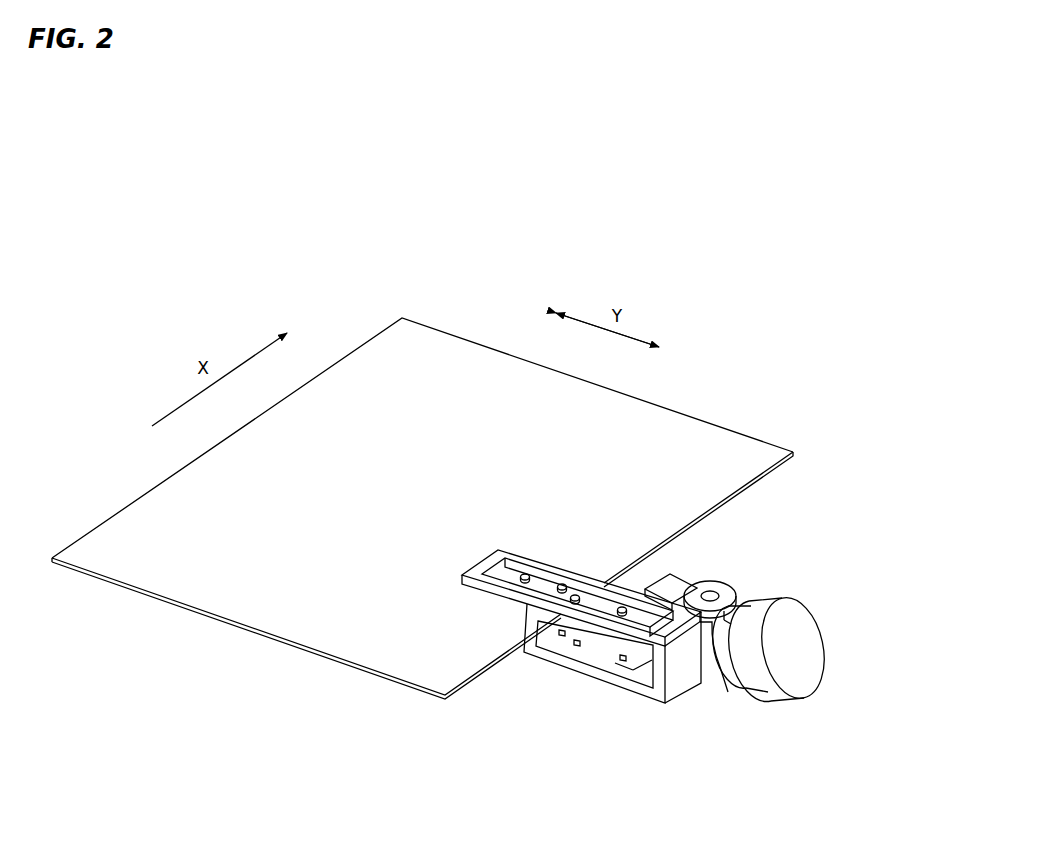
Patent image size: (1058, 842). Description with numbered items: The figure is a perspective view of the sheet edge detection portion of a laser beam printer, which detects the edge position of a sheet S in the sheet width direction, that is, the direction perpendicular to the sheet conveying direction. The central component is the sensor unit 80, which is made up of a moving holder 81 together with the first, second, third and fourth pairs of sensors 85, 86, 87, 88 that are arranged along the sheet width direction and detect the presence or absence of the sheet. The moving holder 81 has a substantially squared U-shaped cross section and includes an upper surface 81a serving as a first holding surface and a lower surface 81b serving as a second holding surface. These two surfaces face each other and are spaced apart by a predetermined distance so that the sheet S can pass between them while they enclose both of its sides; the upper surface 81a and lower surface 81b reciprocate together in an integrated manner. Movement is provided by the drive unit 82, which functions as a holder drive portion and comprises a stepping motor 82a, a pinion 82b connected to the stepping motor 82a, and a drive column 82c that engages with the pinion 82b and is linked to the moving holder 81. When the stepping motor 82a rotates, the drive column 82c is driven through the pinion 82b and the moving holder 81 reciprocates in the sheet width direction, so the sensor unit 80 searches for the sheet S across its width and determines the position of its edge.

The sheet S is at (242, 607).
The sensor unit 80 is at (585, 495).
The moving holder 81 is at (562, 653).
The upper surface 81a is at (477, 586).
The lower surface 81b is at (528, 653).
The first pair of sensors 85 is at (528, 568).
The second pair of sensors 86 is at (565, 580).
The third pair of sensors 87 is at (584, 592).
The fourth pair of sensors 88 is at (632, 592).
The drive unit 82 is at (805, 586).
The stepping motor 82a is at (806, 652).
The pinion 82b is at (722, 653).
The drive column 82c is at (738, 583).